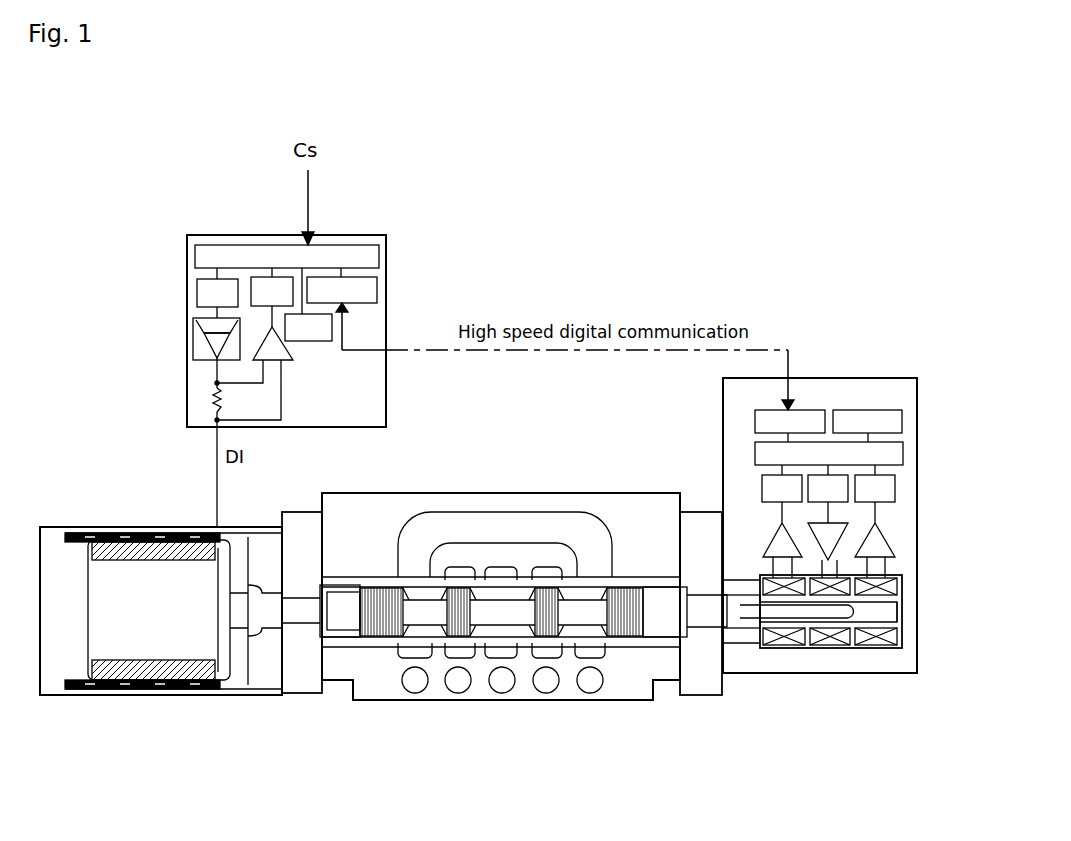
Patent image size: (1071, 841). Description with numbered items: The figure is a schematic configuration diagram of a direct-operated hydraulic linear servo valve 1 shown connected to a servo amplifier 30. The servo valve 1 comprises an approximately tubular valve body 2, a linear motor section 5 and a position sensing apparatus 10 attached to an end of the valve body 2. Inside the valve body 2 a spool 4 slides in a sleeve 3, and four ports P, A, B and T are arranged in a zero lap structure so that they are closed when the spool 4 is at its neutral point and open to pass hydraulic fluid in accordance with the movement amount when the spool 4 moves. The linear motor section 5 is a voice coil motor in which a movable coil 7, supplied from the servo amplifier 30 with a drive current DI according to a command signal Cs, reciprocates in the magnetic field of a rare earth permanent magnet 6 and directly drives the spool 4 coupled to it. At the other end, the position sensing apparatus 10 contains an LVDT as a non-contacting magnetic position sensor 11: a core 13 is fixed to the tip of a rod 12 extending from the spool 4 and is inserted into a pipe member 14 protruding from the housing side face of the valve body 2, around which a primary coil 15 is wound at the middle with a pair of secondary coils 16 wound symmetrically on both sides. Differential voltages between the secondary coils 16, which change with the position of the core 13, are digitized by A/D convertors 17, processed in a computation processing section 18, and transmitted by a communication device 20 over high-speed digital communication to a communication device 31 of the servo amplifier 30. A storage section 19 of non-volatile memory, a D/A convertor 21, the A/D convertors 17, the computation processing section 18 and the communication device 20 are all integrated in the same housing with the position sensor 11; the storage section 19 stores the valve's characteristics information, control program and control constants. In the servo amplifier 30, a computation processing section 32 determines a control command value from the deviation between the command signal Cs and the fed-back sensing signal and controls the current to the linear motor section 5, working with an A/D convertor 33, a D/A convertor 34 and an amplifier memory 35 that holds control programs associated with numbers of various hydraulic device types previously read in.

The hydraulic linear servo valve 1 is at (690, 728).
The valve body 2 is at (443, 693).
The sleeve 3 is at (548, 565).
The spool 4 is at (580, 610).
The linear motor section 5 is at (97, 615).
The permanent magnet 6 is at (115, 689).
The movable coil 7 is at (217, 689).
The position sensing apparatus 10 is at (907, 377).
The position sensor (LVDT) 11 is at (912, 578).
The rod 12 is at (748, 612).
The core 13 is at (837, 613).
The pipe member 14 is at (893, 625).
The primary coil 15 is at (827, 640).
The secondary coil 16 is at (873, 645).
The A/D convertor 17 is at (763, 487).
The computation processing section 18 is at (762, 457).
The storage section 19 is at (858, 417).
The communication device 20 is at (772, 422).
The D/A convertor 21 is at (812, 498).
The servo amplifier 30 is at (187, 280).
The communication device 31 is at (358, 300).
The computation processing section 32 is at (343, 255).
The A/D convertor 33 is at (257, 287).
The D/A convertor 34 is at (198, 295).
The amplifier memory 35 is at (313, 333).